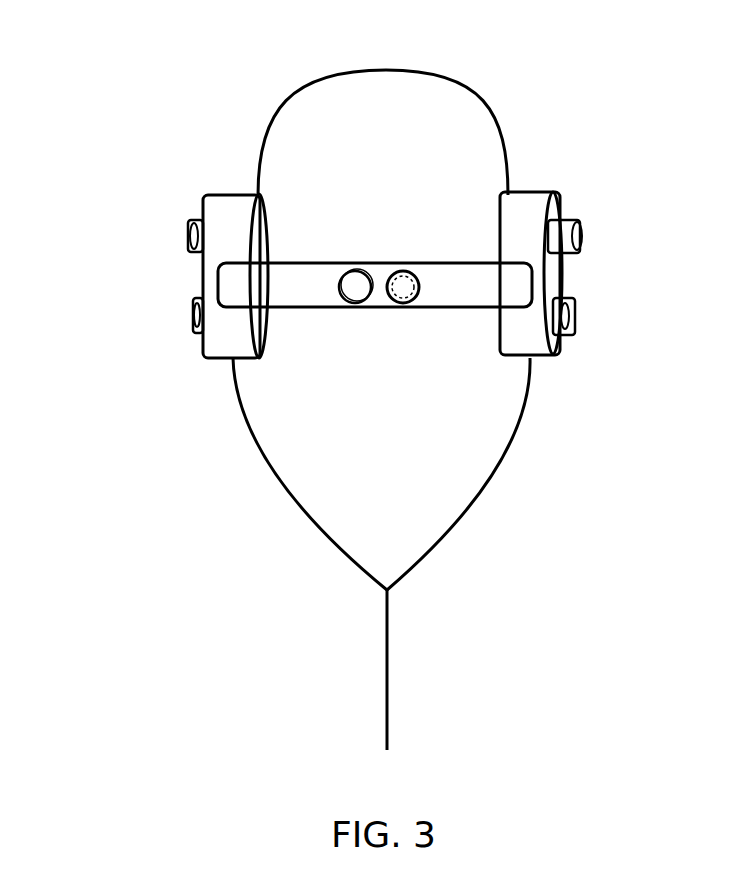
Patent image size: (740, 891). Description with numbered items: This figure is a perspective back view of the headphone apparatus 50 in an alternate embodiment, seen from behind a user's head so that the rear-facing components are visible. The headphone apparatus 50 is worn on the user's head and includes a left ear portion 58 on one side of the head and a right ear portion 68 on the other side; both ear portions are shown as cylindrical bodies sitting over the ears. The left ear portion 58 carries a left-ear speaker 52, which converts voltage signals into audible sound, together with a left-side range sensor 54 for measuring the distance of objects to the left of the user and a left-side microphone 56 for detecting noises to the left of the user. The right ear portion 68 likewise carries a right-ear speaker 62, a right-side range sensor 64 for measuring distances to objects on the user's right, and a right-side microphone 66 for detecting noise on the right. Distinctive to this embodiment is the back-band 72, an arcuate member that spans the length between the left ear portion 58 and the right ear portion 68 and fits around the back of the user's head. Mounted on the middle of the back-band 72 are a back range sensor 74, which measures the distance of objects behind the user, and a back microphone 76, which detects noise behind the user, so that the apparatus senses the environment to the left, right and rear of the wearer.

The headphone apparatus 50 is at (246, 92).
The left-ear speaker 52 is at (258, 230).
The left-side range sensor 54 is at (197, 222).
The left-side microphone 56 is at (193, 330).
The left ear portion 58 is at (243, 343).
The right-ear speaker 62 is at (499, 222).
The right-side range sensor 64 is at (575, 223).
The right-side microphone 66 is at (572, 335).
The right ear portion 68 is at (525, 333).
The back-band 72 is at (253, 284).
The back range sensor 74 is at (403, 271).
The back microphone 76 is at (353, 293).